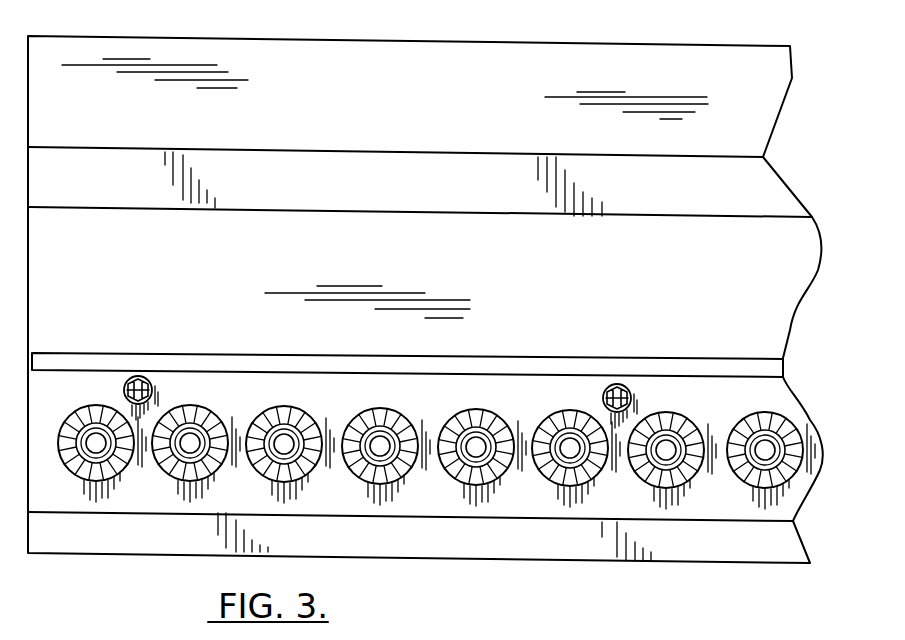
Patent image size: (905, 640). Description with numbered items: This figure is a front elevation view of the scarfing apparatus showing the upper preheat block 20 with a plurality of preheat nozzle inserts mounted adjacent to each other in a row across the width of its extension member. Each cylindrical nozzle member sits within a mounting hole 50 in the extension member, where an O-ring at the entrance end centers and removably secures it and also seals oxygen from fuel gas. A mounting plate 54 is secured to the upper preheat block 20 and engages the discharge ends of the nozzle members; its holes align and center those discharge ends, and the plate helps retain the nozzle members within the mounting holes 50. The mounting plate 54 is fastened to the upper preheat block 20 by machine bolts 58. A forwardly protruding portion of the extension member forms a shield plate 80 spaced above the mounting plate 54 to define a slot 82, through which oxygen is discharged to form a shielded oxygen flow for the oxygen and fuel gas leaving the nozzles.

The upper preheat block 20 is at (522, 45).
The mounting hole 50 is at (205, 409).
The mounting plate 54 is at (726, 514).
The machine bolts 58 is at (152, 384).
The shield plate 80 is at (603, 279).
The slot 82 is at (445, 362).